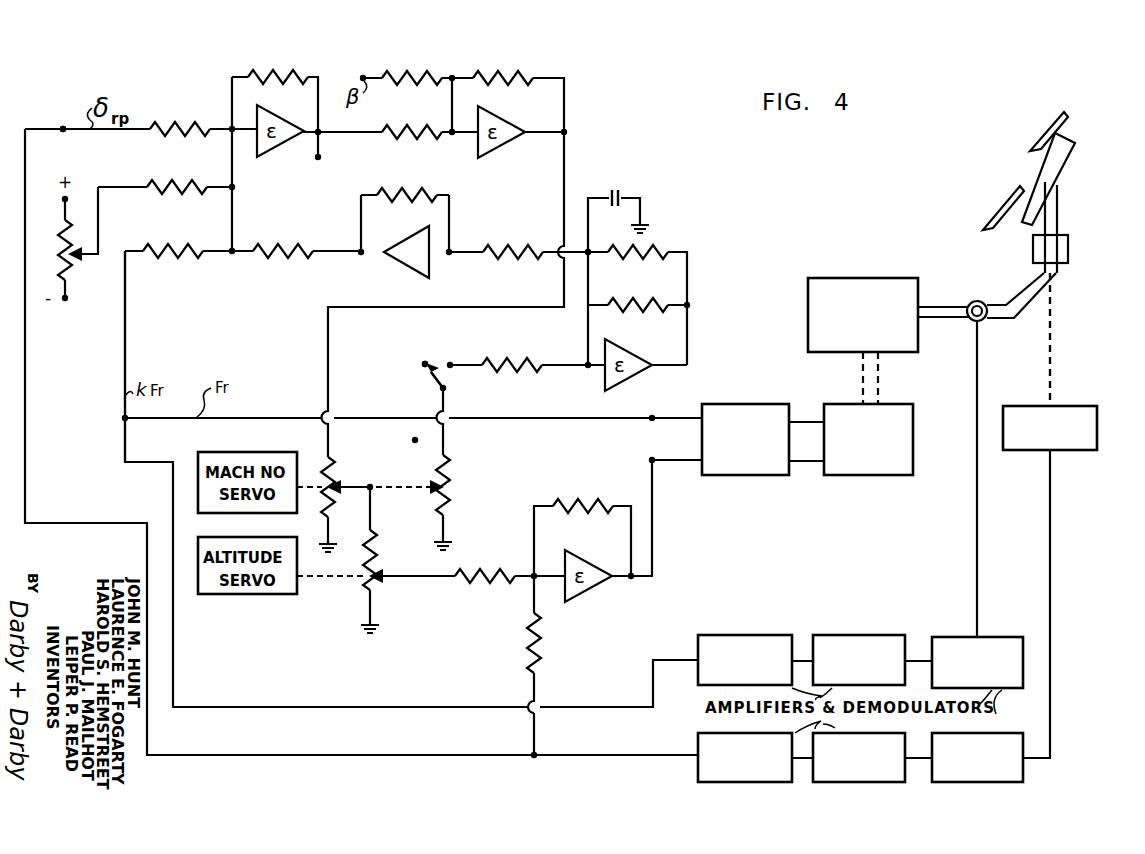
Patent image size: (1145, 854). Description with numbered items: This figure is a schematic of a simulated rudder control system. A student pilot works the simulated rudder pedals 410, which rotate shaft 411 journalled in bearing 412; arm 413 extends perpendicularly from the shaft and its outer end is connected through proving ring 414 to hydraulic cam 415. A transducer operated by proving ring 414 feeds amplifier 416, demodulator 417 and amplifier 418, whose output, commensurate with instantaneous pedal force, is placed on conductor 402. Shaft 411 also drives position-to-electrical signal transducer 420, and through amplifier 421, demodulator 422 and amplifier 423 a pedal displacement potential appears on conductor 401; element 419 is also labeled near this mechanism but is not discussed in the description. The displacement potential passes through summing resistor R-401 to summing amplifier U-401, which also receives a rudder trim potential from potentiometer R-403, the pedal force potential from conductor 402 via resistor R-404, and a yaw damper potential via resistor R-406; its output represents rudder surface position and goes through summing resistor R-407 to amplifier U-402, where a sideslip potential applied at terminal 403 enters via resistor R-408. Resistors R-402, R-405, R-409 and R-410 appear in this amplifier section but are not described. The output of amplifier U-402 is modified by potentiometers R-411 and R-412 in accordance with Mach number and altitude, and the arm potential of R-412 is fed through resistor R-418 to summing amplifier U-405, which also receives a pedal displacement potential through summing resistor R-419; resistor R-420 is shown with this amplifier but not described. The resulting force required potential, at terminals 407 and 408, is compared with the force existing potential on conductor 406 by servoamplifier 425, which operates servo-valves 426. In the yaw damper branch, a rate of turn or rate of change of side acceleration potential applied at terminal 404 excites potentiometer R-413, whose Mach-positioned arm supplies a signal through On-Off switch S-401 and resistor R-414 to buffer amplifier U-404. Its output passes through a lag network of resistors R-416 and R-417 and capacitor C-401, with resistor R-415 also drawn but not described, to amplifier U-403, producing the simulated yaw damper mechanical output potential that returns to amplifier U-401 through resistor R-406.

The conductor 401 is at (61, 127).
The conductor 402 is at (122, 369).
The terminal 403 is at (362, 77).
The terminal 404 is at (415, 440).
The conductor 406 is at (575, 409).
The terminal 407 is at (657, 449).
The terminal 408 is at (321, 156).
The simulated rudder pedals 410 is at (1027, 179).
The shaft 411 is at (1060, 205).
The bearing 412 is at (1070, 245).
The arm 413 is at (1003, 323).
The proving ring 414 is at (963, 303).
The hydraulic cam 415 is at (848, 275).
The amplifier 416 is at (988, 638).
The demodulator 417 is at (843, 636).
The amplifier 418 is at (737, 636).
The shaft position feedback connection 419 is at (1059, 361).
The position-to-electrical signal transducer 420 is at (1078, 408).
The amplifier 421 is at (977, 757).
The demodulator 422 is at (859, 757).
The amplifier 423 is at (745, 757).
The servoamplifier 425 is at (730, 407).
The servo-valves 426 is at (891, 407).
The summing resistor R-401 is at (156, 126).
The resistor R-402 is at (154, 184).
The potentiometer R-403 is at (74, 290).
The resistor R-404 is at (154, 248).
The resistor R-405 is at (292, 70).
The resistor R-406 is at (261, 248).
The summing resistor R-407 is at (390, 130).
The resistor R-408 is at (387, 76).
The resistor R-409 is at (492, 76).
The resistor R-410 is at (387, 194).
The potentiometer R-411 is at (343, 476).
The potentiometer R-412 is at (382, 604).
The potentiometer R-413 is at (448, 512).
The resistor R-414 is at (492, 363).
The resistor R-415 is at (615, 304).
The resistor R-416 is at (656, 251).
The resistor R-417 is at (495, 251).
The resistor R-418 is at (461, 574).
The summing resistor R-419 is at (549, 632).
The resistor R-420 is at (563, 505).
The summing amplifier U-401 is at (296, 140).
The amplifier U-402 is at (498, 156).
The amplifier U-403 is at (384, 262).
The buffer amplifier U-404 is at (617, 343).
The summing amplifier U-405 is at (600, 594).
The capacitor C-401 is at (601, 196).
The yaw damper On-Off switch S-401 is at (427, 389).